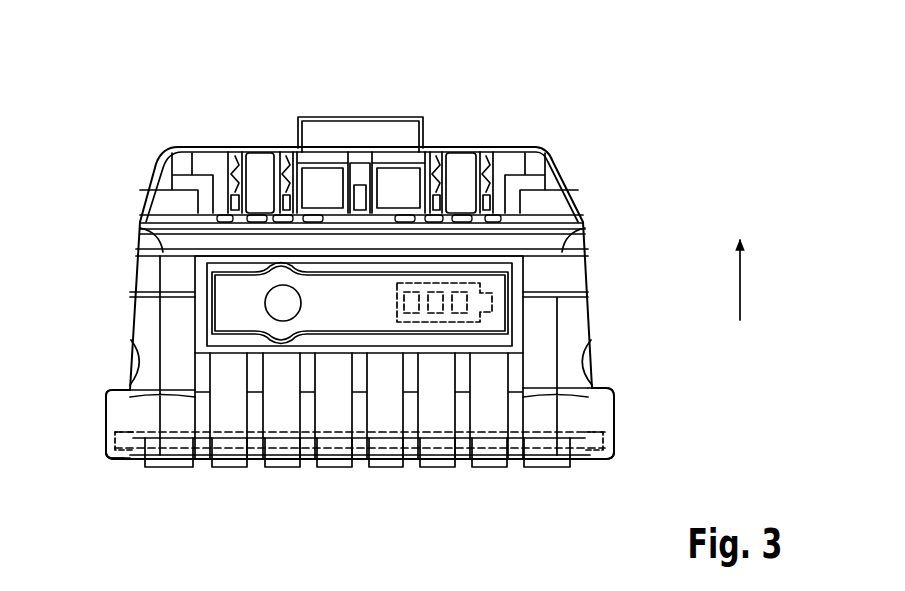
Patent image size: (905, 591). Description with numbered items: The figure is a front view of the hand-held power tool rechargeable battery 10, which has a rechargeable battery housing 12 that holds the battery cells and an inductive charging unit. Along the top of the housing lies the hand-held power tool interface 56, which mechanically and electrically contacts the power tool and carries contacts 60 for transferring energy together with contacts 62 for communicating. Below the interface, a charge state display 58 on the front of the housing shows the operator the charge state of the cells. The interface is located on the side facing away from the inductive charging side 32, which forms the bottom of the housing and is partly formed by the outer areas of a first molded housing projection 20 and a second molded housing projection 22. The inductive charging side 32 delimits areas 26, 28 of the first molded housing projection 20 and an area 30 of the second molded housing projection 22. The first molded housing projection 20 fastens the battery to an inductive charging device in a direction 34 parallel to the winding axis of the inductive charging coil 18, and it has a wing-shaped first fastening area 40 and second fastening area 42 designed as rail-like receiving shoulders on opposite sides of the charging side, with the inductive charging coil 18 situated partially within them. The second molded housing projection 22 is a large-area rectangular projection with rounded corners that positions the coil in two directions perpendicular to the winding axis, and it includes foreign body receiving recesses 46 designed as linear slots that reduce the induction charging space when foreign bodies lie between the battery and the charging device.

The hand-held power tool rechargeable battery 10 is at (674, 100).
The rechargeable battery housing 12 is at (572, 314).
The inductive charging coil 18 is at (614, 437).
The first molded housing projection 20 is at (79, 405).
The second molded housing projection 22 is at (664, 414).
The area of first molded housing projection 26 is at (122, 460).
The area of first molded housing projection 28 is at (597, 461).
The area of second molded housing projection 30 is at (437, 463).
The inductive charging side 32 is at (357, 483).
The direction 34 is at (741, 287).
The first fastening area 40 is at (110, 398).
The second fastening area 42 is at (606, 404).
The foreign body receiving recesses 46 is at (248, 470).
The hand-held power tool interface 56 is at (535, 98).
The charge state display 58 is at (493, 284).
The contacts for transferring energy 60 is at (235, 150).
The contacts for communicating 62 is at (290, 150).